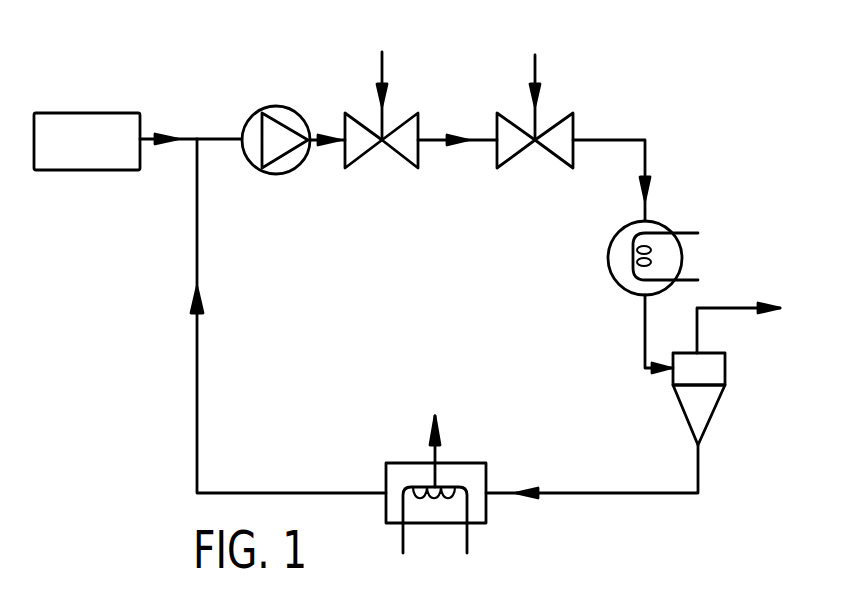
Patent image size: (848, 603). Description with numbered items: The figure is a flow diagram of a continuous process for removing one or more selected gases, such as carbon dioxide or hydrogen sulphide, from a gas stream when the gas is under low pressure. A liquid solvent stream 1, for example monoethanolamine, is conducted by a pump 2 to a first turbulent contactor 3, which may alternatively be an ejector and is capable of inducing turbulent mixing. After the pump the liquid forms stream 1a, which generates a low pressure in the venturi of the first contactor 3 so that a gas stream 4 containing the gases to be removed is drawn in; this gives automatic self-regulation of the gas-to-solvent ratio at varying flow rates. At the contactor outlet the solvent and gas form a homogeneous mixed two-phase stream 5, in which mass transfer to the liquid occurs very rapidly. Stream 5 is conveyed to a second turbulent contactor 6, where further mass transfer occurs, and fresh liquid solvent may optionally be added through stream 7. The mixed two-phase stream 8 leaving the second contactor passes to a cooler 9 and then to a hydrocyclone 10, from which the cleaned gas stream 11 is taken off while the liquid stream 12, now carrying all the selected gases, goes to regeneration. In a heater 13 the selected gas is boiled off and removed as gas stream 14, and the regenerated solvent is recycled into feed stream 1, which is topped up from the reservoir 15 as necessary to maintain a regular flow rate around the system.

The liquid solvent stream 1 is at (220, 140).
The liquid stream after pump 1a is at (318, 142).
The pump 2 is at (287, 108).
The first turbulent contactor 3 is at (388, 143).
The gas stream 4 is at (381, 78).
The mixed two-phase stream 5 is at (480, 142).
The second turbulent contactor 6 is at (545, 143).
The fresh liquid solvent stream 7 is at (536, 77).
The mixed two-phase stream 8 is at (647, 163).
The cooler 9 is at (606, 262).
The hydrocyclone 10 is at (692, 396).
The cleaned gas stream 11 is at (766, 322).
The liquid stream 12 is at (700, 482).
The heater 13 is at (486, 513).
The gas stream 14 is at (445, 433).
The reservoir 15 is at (100, 170).